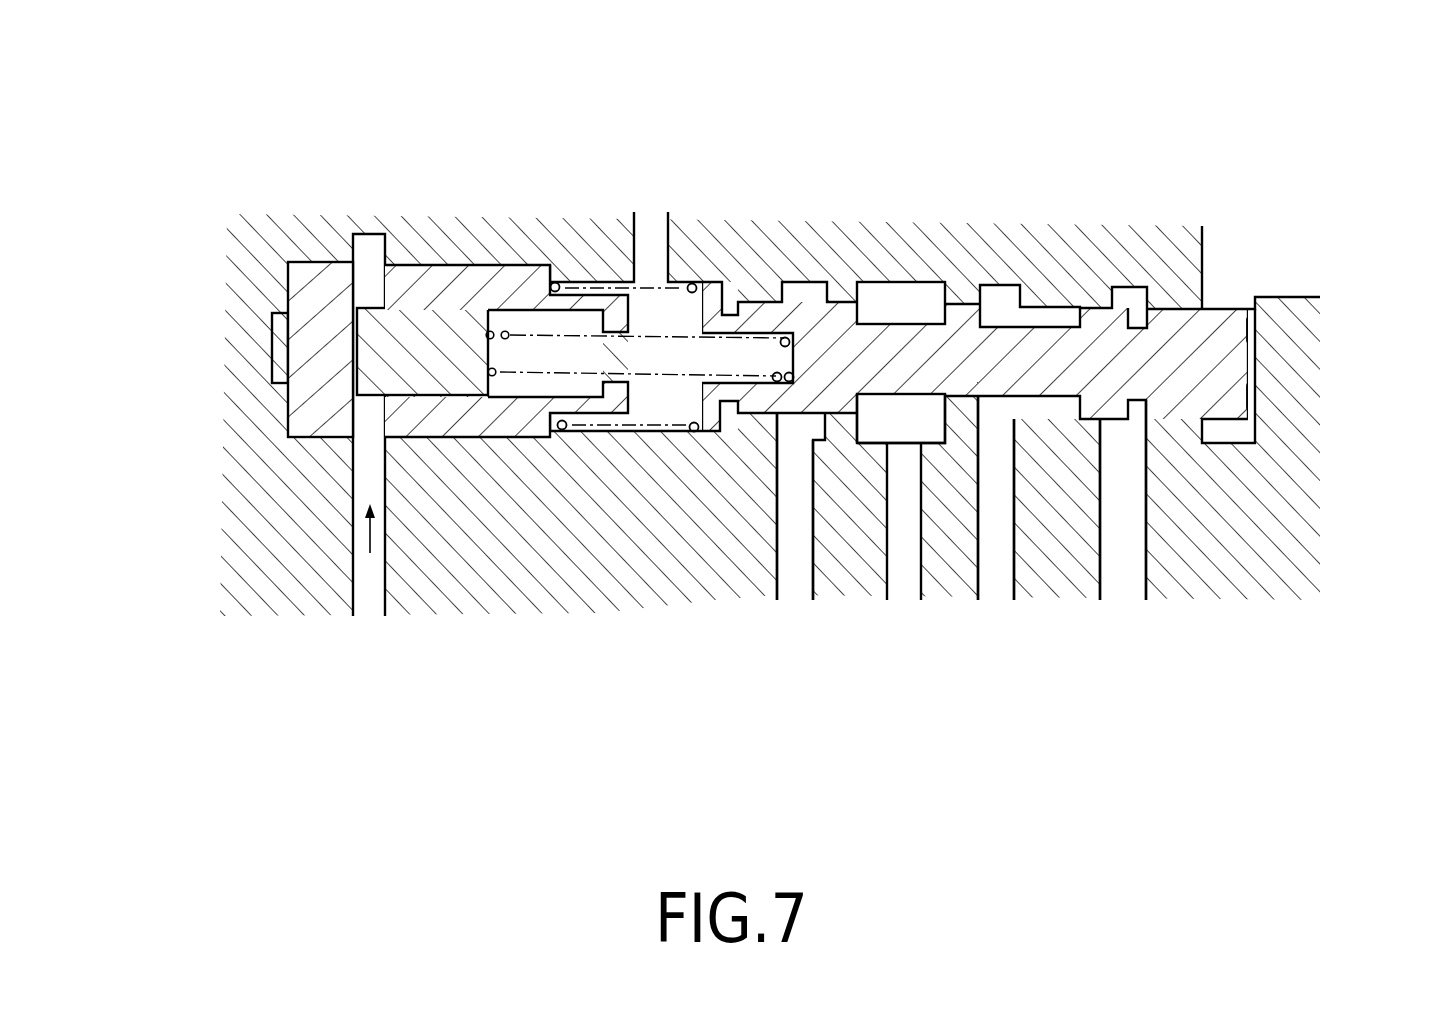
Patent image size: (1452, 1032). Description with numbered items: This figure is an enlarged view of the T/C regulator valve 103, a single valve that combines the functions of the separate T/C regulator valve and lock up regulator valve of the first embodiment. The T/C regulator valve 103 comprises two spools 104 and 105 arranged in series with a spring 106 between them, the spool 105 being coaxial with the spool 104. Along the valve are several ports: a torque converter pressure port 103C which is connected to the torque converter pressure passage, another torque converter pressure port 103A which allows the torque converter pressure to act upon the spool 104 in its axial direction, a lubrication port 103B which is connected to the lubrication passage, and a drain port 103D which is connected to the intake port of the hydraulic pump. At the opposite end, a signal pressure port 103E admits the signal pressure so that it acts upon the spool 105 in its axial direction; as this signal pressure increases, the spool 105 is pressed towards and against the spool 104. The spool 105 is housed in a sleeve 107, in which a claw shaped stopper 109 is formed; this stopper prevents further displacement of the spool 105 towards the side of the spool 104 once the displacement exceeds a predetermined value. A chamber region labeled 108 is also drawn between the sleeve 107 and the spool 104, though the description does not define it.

The T/C regulator valve 103 is at (724, 329).
The torque converter pressure port 103A is at (1130, 463).
The lubrication port 103B is at (993, 541).
The torque converter pressure port 103C is at (903, 422).
The drain port 103D is at (785, 530).
The signal pressure port 103E is at (365, 463).
The spool 104 is at (810, 318).
The spool 105 is at (430, 340).
The spring 106 is at (512, 372).
The sleeve 107 is at (541, 263).
The chamber 108 is at (686, 339).
The claw shaped stopper 109 is at (628, 395).